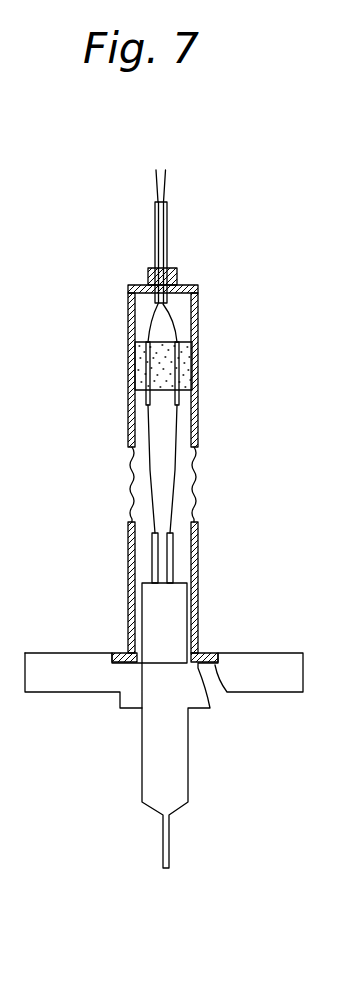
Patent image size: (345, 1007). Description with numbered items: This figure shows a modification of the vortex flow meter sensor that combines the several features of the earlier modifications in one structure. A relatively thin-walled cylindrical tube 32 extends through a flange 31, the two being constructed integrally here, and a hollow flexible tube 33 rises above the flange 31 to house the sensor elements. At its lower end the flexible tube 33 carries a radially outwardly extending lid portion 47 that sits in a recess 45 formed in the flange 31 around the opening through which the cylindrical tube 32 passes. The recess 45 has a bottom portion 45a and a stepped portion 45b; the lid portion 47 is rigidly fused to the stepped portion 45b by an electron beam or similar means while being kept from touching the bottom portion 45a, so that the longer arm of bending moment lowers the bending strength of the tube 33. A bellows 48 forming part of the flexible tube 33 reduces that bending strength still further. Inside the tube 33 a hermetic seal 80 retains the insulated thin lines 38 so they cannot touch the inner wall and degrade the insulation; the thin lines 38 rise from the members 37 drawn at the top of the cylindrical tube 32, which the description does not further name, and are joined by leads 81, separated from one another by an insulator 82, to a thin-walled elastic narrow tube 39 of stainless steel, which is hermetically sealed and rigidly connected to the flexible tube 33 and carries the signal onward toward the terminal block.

The flange 31 is at (272, 656).
The cylindrical tube 32 is at (157, 612).
The flexible tube 33 is at (199, 319).
The pins 37 is at (153, 552).
The insulated thin lines 38 is at (177, 432).
The elastic narrow tube 39 is at (166, 240).
The recess 45 is at (114, 667).
The bottom portion 45a is at (212, 712).
The stepped portion 45b is at (223, 682).
The lid portion 47 is at (207, 651).
The bellows 48 is at (195, 487).
The hermetic seal 80 is at (180, 416).
The leads 81 is at (148, 362).
The insulator 82 is at (186, 360).